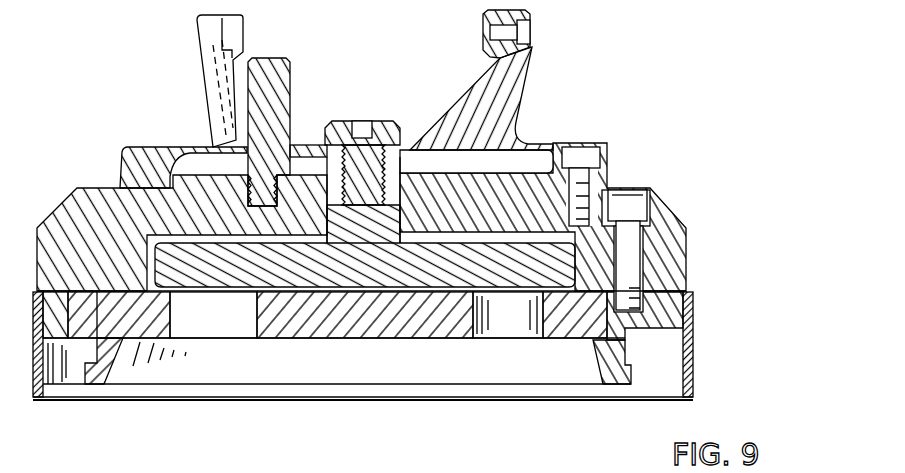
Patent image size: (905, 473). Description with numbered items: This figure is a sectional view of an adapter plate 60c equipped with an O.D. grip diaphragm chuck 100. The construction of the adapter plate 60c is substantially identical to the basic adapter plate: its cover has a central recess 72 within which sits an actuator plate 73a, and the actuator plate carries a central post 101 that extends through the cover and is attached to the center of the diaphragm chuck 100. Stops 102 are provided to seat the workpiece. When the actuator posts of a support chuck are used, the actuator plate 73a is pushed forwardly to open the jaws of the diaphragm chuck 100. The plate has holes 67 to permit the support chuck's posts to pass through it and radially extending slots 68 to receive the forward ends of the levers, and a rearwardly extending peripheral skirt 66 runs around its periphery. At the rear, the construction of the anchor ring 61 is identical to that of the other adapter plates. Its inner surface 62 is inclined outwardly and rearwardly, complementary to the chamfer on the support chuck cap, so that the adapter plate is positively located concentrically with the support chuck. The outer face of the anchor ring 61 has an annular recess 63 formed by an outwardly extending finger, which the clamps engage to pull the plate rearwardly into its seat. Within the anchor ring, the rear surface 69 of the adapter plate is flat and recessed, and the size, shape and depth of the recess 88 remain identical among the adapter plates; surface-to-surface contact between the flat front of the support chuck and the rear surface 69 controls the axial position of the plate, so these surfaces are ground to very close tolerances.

The central recess 72 is at (130, 215).
The stops 102 is at (292, 77).
The O.D. grip diaphragm chuck 100 is at (540, 62).
The adapter plate 60c is at (697, 165).
The peripheral skirt 66 is at (690, 313).
The annular recess 63 is at (628, 350).
The holes 67 is at (497, 323).
The rear surface 69 is at (320, 350).
The actuator plate 73a is at (250, 270).
The central post 101 is at (352, 258).
The recess 88 is at (217, 365).
The radially extending slots 68 is at (193, 318).
The inner surface 62 is at (121, 368).
The anchor ring 61 is at (81, 393).